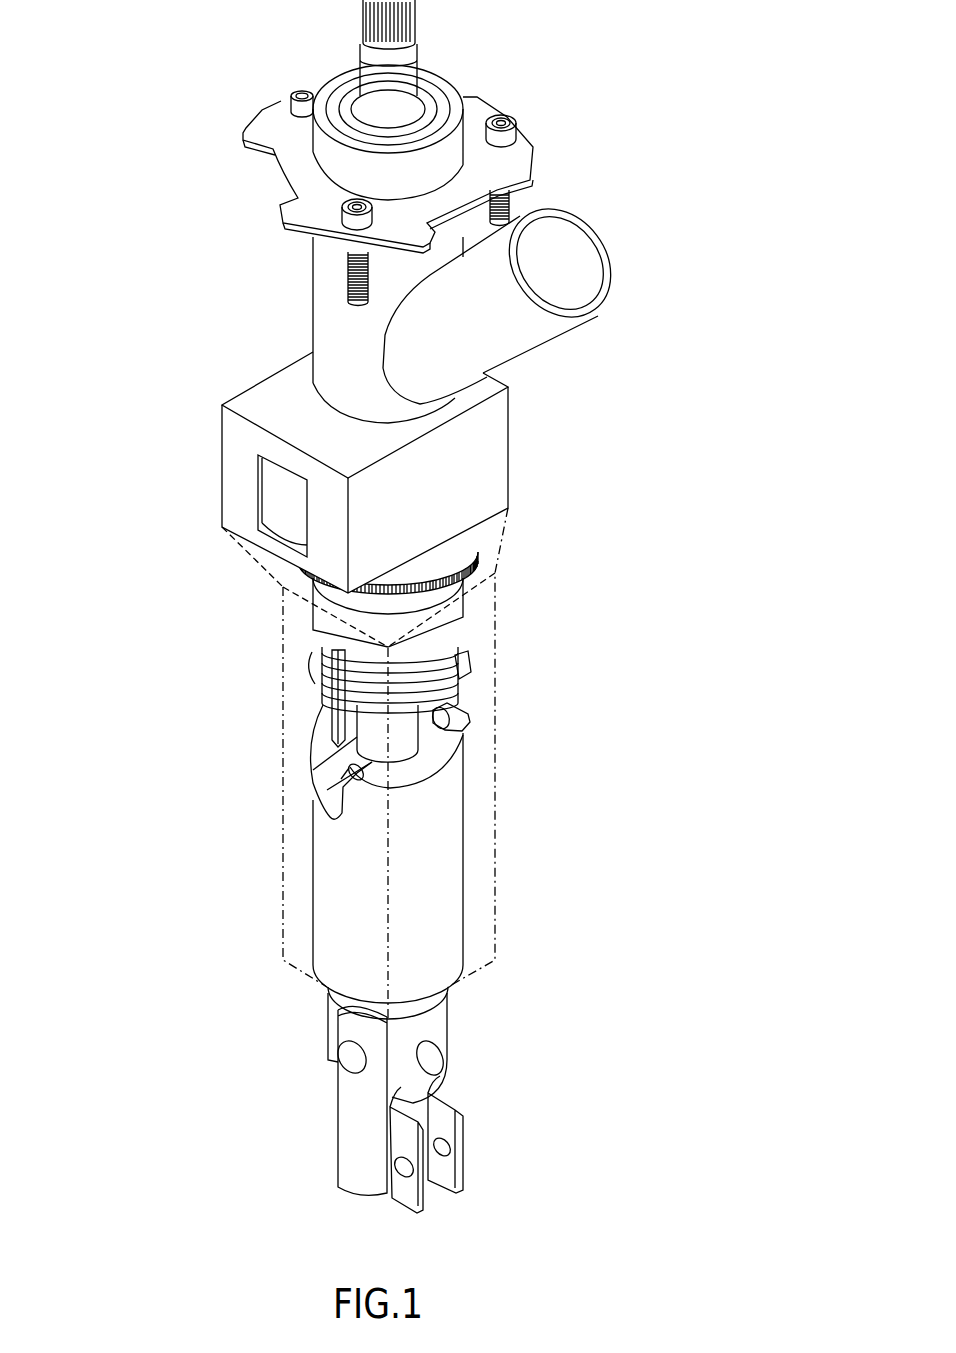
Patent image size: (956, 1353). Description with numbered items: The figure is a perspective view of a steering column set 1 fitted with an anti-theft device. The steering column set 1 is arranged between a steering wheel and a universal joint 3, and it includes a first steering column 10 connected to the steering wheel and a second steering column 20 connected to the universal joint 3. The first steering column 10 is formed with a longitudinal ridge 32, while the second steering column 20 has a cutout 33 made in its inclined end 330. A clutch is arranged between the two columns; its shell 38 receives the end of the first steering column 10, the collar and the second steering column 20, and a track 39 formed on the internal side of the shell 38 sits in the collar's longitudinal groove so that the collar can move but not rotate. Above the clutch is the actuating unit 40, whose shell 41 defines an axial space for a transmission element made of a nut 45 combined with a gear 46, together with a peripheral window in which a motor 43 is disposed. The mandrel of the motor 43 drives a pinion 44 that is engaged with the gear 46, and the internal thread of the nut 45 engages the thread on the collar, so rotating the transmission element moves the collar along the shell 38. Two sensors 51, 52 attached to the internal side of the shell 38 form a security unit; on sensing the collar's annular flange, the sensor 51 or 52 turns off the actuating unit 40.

The steering column set 1 is at (424, 22).
The actuating unit 40 is at (240, 384).
The shell 41 is at (466, 482).
The motor 43 is at (285, 502).
The pinion 44 is at (267, 572).
The gear 46 is at (440, 546).
The nut 45 is at (448, 624).
The sensor 52 is at (468, 666).
The sensor 51 is at (468, 716).
The track 39 is at (332, 700).
The first steering column 10 is at (372, 732).
The longitudinal ridge 32 is at (372, 766).
The cutout 33 is at (335, 800).
The inclined end 330 is at (440, 746).
The shell 38 is at (496, 812).
The second steering column 20 is at (444, 912).
The universal joint 3 is at (338, 1113).